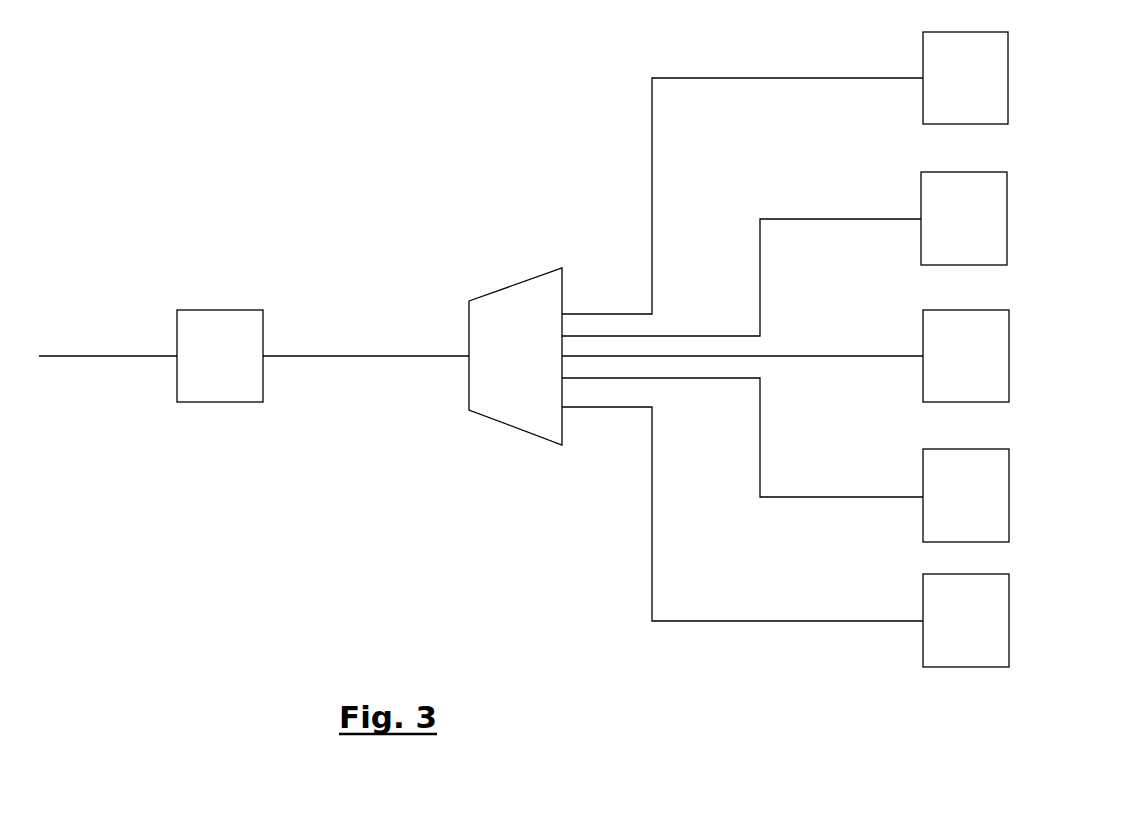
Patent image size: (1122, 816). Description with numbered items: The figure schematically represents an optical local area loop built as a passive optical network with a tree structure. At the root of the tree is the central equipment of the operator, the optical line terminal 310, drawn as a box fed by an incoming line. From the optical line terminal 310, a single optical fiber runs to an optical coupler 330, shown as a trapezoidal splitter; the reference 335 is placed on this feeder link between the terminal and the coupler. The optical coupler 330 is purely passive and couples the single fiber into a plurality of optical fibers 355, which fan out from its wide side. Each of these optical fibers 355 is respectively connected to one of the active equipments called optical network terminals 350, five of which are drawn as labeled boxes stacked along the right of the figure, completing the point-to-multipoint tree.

The optical line terminal 310 is at (222, 310).
The optical coupler 330 is at (523, 278).
The feeder fiber 335 is at (378, 357).
The optical network terminals 350 is at (1007, 182).
The optical fibers 355 is at (652, 498).